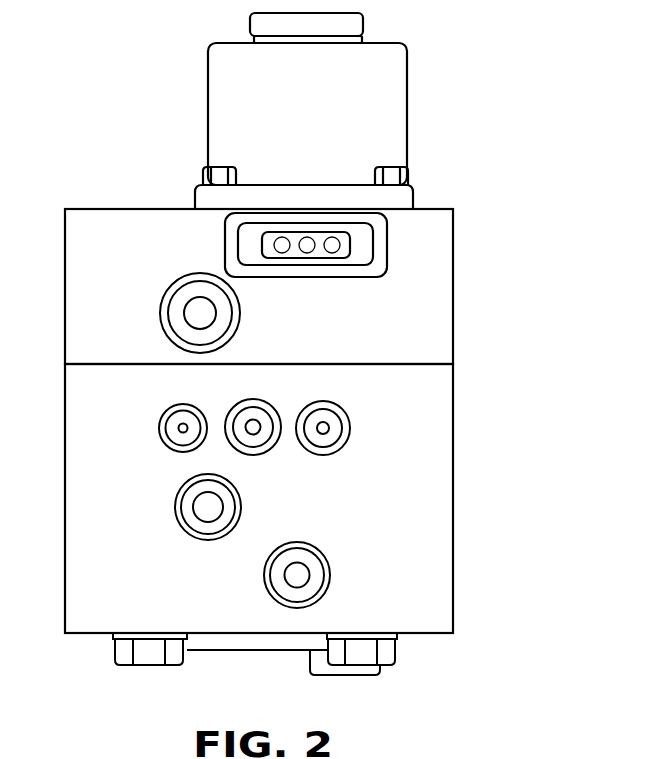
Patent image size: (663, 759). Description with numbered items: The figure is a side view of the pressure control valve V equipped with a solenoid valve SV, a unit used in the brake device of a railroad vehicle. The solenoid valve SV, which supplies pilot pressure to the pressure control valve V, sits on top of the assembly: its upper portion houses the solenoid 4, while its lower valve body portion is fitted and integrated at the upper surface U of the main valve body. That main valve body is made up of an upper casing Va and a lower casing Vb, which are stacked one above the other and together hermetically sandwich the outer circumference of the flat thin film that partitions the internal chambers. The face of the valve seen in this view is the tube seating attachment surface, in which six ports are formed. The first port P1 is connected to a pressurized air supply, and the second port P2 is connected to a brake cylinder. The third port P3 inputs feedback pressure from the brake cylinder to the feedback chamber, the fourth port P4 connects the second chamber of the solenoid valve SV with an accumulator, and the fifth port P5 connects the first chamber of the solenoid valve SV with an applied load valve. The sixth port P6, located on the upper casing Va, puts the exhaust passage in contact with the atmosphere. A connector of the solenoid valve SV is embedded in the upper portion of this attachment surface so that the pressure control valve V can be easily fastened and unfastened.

The solenoid valve SV is at (346, 108).
The solenoid 4 is at (367, 110).
The upper surface U is at (308, 416).
The pressure control valve V is at (308, 423).
The upper casing Va is at (308, 286).
The lower casing Vb is at (307, 519).
The first port P1 is at (313, 580).
The second port P2 is at (207, 510).
The third port P3 is at (255, 437).
The fourth port P4 is at (325, 438).
The fifth port P5 is at (175, 435).
The sixth port P6 is at (222, 317).